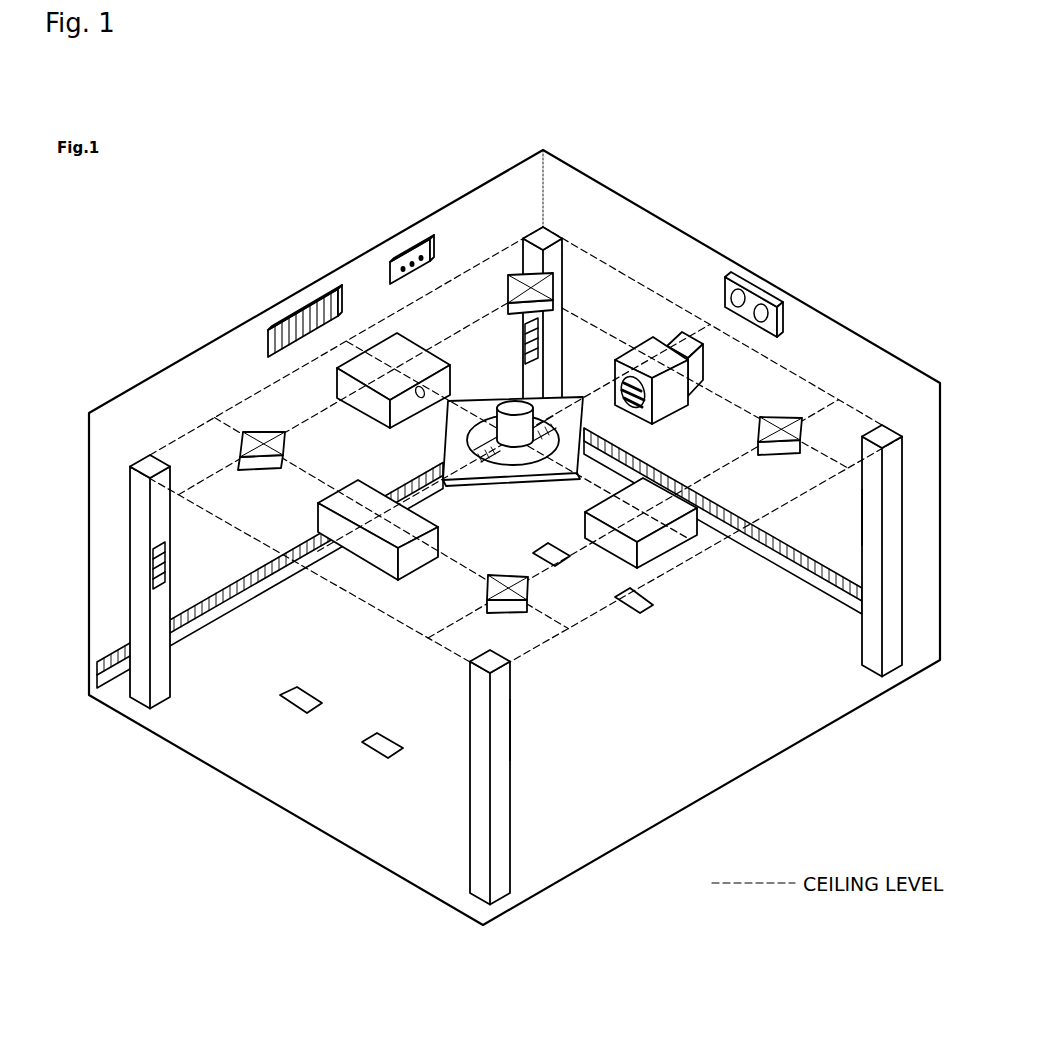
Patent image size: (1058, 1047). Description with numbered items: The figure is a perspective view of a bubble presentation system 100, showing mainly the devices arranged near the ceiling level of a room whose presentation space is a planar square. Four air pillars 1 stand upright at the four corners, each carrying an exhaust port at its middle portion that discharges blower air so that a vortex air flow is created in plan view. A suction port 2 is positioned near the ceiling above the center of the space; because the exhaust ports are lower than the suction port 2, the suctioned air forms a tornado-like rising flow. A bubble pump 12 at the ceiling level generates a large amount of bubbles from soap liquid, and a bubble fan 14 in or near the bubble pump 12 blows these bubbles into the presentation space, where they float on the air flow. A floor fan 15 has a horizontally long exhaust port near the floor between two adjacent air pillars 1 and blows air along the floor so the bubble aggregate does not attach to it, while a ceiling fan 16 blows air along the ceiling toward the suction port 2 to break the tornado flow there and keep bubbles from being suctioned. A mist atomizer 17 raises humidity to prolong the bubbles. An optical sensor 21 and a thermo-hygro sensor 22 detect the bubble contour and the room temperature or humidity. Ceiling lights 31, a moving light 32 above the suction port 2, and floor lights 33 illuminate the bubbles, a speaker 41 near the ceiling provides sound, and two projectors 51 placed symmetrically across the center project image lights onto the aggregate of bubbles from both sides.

The bubble presentation system 100 is at (164, 332).
The air pillar 1 is at (548, 230).
The suction port 2 is at (448, 432).
The bubble pump 12 is at (672, 403).
The bubble fan 14 is at (697, 371).
The floor fan 15 is at (220, 621).
The ceiling fan 16 is at (293, 308).
The mist atomizer 17 is at (393, 253).
The optical sensor 21 is at (742, 290).
The thermo-hygro sensor 22 is at (770, 298).
The ceiling light 31 is at (553, 294).
The moving light 32 is at (506, 405).
The floor light 33 is at (397, 745).
The speaker 41 is at (413, 565).
The projector 51 is at (337, 383).